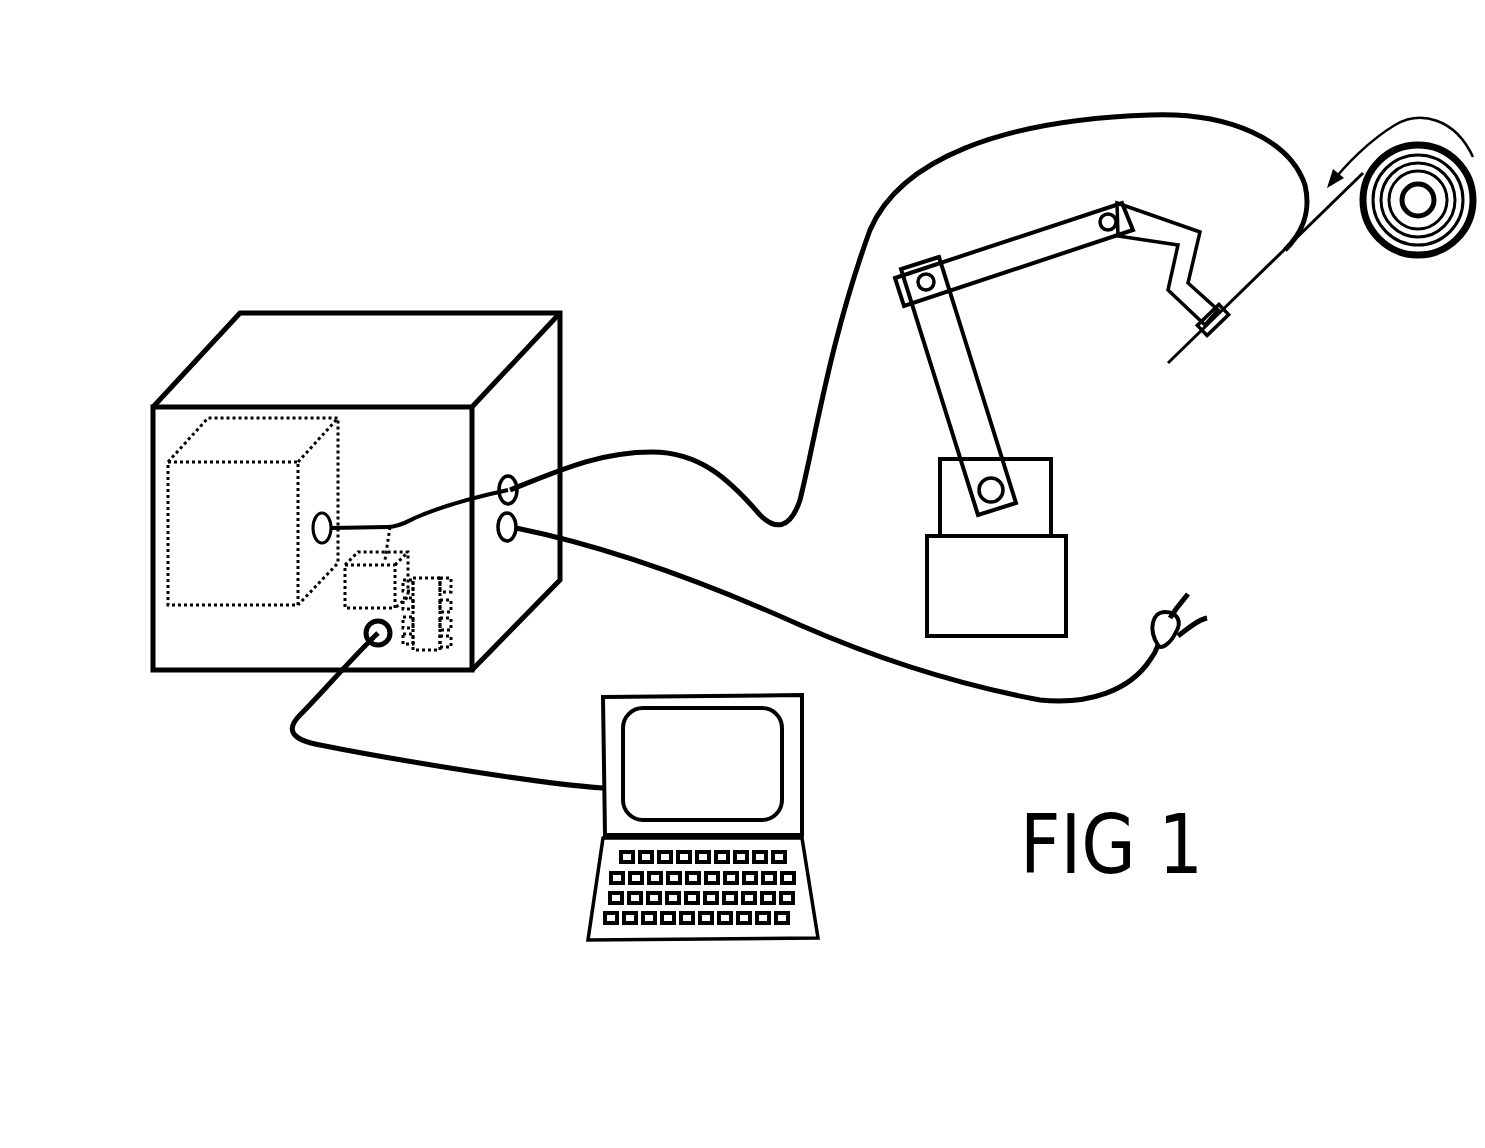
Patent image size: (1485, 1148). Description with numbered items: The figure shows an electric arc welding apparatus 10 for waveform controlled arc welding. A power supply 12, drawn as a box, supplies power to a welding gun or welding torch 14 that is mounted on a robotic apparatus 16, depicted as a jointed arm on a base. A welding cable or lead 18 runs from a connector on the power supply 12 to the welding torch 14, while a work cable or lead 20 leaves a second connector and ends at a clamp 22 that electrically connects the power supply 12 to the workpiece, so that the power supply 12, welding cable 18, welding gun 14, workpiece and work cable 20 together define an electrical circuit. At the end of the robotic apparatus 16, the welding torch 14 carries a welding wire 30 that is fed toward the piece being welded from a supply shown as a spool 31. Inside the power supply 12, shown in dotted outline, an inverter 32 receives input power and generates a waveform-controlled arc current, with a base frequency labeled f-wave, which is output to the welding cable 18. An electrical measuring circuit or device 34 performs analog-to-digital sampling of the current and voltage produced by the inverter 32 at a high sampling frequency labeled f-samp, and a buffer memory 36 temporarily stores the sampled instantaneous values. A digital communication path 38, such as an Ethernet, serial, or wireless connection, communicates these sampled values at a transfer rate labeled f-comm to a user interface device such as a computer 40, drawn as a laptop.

The electric arc welding apparatus 10 is at (663, 237).
The power supply 12 is at (330, 313).
The welding gun or welding torch 14 is at (1241, 359).
The robotic apparatus 16 is at (986, 399).
The welding cable or lead 18 is at (833, 301).
The work cable or lead 20 is at (938, 683).
The clamp 22 is at (1197, 643).
The welding wire 30 is at (1188, 350).
The spool 31 is at (1403, 253).
The inverter 32 is at (202, 608).
The electrical measuring circuit or device 34 is at (343, 600).
The buffer memory 36 is at (440, 618).
The digital communication path 38 is at (370, 762).
The computer 40 is at (597, 867).